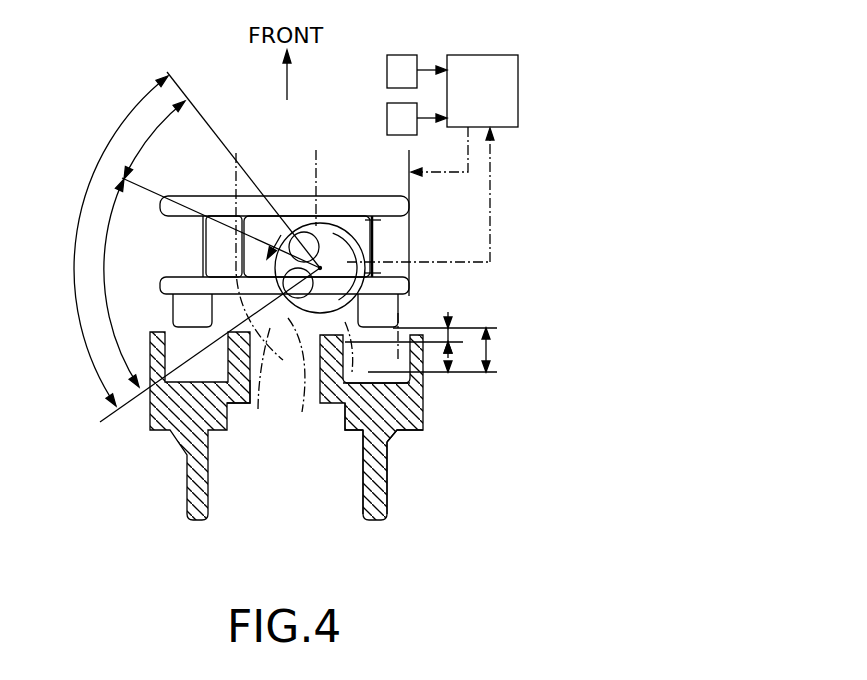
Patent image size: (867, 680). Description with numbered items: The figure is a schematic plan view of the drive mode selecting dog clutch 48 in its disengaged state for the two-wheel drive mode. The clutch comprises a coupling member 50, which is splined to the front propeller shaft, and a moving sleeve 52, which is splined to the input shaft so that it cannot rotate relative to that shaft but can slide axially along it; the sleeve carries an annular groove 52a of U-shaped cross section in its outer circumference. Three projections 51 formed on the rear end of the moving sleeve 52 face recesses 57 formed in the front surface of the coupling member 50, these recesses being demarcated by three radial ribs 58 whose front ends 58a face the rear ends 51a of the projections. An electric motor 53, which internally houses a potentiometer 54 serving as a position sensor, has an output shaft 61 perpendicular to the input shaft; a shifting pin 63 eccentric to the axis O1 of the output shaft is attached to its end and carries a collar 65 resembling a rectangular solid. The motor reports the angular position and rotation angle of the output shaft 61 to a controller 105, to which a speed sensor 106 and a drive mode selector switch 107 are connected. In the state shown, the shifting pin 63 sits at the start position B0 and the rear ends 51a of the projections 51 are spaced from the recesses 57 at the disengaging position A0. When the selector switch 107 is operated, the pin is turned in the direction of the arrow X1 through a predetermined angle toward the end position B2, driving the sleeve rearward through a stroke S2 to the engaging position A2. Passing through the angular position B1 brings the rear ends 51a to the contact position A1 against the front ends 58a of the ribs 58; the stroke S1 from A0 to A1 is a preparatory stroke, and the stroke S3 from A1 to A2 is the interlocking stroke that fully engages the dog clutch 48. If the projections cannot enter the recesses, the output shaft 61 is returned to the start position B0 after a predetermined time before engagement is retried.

The drive mode selecting dog clutch 48 is at (135, 328).
The coupling member 50 is at (185, 408).
The projections 51 is at (185, 310).
The rear ends 51a is at (400, 431).
The moving sleeve 52 is at (173, 216).
The annular groove 52a is at (378, 242).
The electric motor 53 is at (253, 406).
The potentiometer 54 is at (342, 381).
The recesses 57 is at (362, 384).
The radial ribs 58 is at (372, 420).
The front ends 58a is at (332, 402).
The output shaft 61 is at (334, 224).
The shifting pin 63 is at (300, 232).
The collar 65 is at (352, 224).
The controller 105 is at (506, 101).
The speed sensor 106 is at (389, 62).
The drive mode selector switch 107 is at (389, 112).
The axis of the output shaft O1 is at (344, 200).
The arrow X1 is at (263, 254).
The start position B0 is at (200, 117).
The angular position B1 is at (157, 194).
The end position B2 is at (128, 406).
The disengaging position A0 is at (497, 328).
The contact position A1 is at (463, 343).
The engaging position A2 is at (497, 373).
The preparatory stroke S1 is at (451, 333).
The stroke S2 is at (490, 351).
The interlocking stroke S3 is at (447, 362).